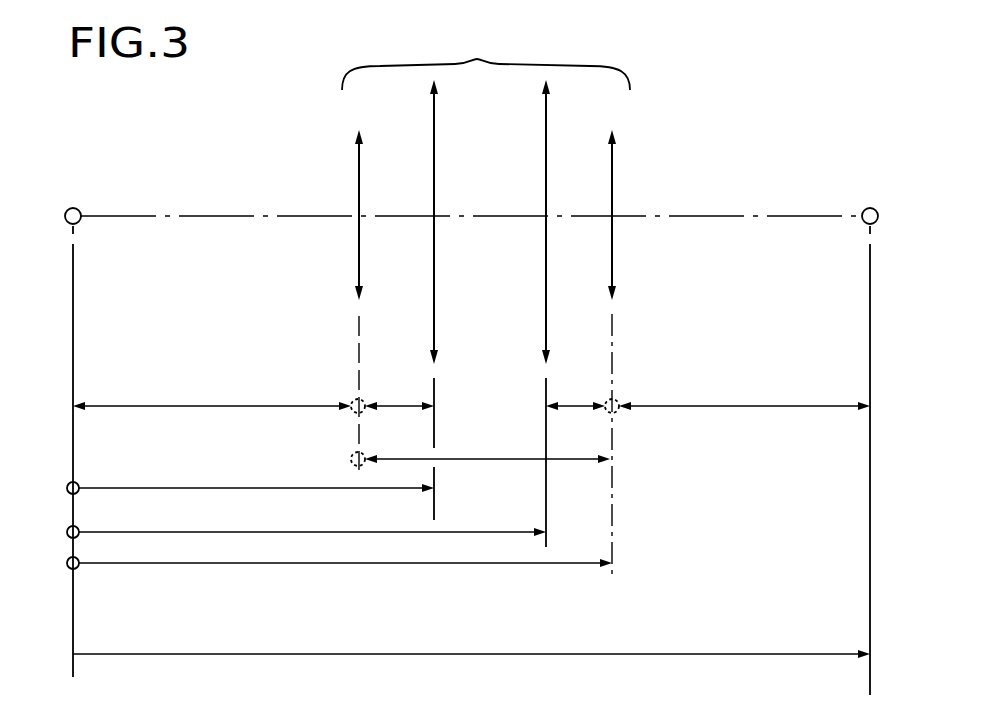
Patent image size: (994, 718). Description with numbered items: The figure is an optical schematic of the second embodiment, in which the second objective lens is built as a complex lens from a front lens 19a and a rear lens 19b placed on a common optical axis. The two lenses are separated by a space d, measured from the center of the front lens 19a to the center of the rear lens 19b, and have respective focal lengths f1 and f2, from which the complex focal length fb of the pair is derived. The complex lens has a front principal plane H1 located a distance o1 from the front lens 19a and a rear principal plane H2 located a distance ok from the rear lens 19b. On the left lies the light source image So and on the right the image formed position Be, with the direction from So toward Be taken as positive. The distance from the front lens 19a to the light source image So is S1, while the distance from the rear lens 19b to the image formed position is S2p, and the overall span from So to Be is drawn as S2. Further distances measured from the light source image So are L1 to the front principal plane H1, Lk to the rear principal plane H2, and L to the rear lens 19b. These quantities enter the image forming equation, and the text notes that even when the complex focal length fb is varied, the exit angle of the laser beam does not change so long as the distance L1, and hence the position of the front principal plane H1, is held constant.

The front lens 19a is at (318, 287).
The rear lens 19b is at (672, 341).
The light source image So is at (78, 425).
The image formed position Be is at (871, 434).
The complex focal length fb is at (486, 57).
The focal length of front lens f1 is at (359, 120).
The focal length of rear lens f2 is at (614, 120).
The front principal plane H1 is at (435, 143).
The rear principal plane H2 is at (546, 281).
The distance from front lens to light source image S1 is at (212, 391).
The distance from light source image to image formed position S2 is at (471, 641).
The distance from rear lens to image formed position S2p is at (744, 391).
The distance from front lens to front principal plane o1 is at (399, 392).
The distance from rear lens to rear principal plane ok is at (575, 392).
The space between lenses d is at (487, 473).
The distance from light source image to front principal plane L1 is at (250, 476).
The distance from light source image to rear principal plane Lk is at (306, 521).
The distance from light source image to rear lens L is at (339, 551).